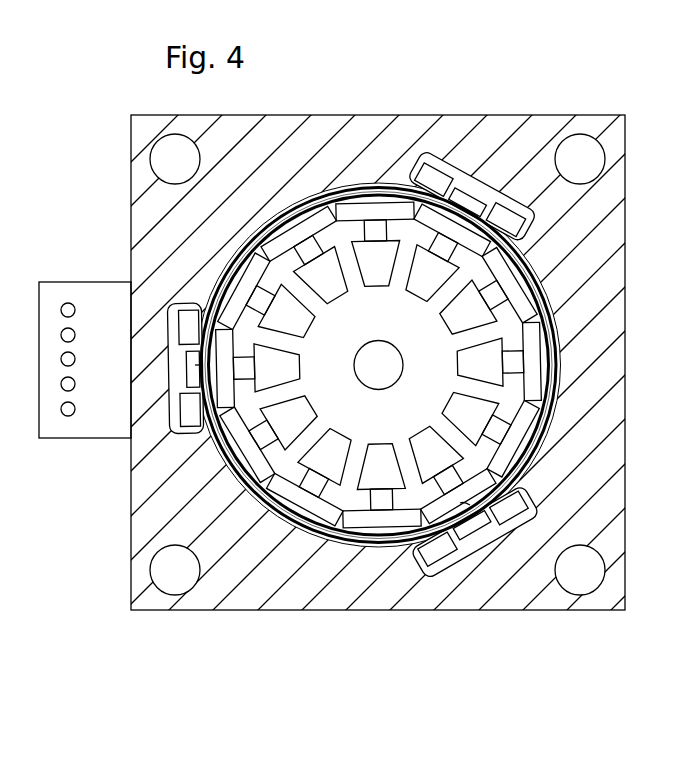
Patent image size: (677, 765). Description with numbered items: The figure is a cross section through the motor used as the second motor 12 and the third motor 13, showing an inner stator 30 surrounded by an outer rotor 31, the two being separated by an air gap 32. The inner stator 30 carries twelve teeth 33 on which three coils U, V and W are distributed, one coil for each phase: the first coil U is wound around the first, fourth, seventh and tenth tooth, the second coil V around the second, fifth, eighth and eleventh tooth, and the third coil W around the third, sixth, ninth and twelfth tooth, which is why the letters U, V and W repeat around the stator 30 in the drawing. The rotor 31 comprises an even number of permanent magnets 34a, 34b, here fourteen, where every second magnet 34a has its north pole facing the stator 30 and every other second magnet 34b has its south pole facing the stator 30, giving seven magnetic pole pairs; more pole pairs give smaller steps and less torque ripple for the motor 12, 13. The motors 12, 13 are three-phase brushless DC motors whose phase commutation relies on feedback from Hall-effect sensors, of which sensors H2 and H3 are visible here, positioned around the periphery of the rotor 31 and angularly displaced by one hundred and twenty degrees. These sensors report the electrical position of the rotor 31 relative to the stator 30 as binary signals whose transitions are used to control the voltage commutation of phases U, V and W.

The second motor 12 is at (338, 382).
The third motor 13 is at (578, 88).
The inner stator 30 is at (410, 410).
The outer rotor 31 is at (548, 342).
The air gap 32 is at (536, 333).
The teeth 33 is at (185, 298).
The permanent magnets 34a is at (302, 218).
The permanent magnets 34b is at (378, 198).
The Hall-effect sensor H2 is at (470, 505).
The Hall-effect sensor H3 is at (195, 365).